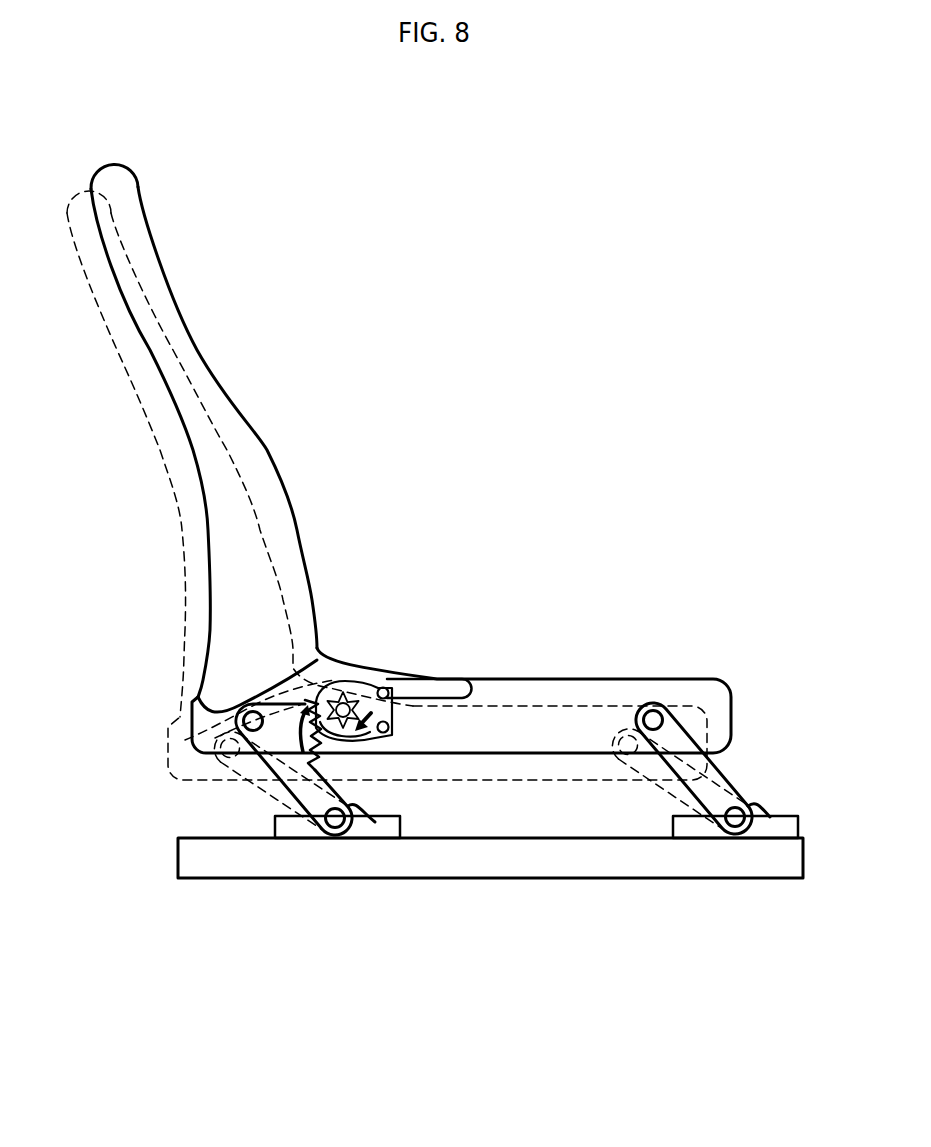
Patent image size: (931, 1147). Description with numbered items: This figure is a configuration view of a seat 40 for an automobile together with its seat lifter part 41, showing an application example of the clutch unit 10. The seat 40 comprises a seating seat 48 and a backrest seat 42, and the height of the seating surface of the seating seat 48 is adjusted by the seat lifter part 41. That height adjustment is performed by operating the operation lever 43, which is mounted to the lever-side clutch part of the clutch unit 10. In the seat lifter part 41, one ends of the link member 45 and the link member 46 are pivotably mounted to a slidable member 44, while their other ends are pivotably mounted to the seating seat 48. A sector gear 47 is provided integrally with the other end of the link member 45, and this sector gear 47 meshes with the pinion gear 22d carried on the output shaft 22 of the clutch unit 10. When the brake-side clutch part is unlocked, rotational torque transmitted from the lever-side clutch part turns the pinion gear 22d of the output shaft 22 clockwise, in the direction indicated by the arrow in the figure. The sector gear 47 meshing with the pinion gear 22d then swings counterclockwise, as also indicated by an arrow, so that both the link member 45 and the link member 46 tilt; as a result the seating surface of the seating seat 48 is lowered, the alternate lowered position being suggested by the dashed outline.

The clutch unit 10 is at (399, 726).
The output shaft 22 is at (345, 688).
The pinion gear 22d is at (366, 712).
The seat 40 is at (344, 390).
The seat lifter part 41 is at (489, 893).
The backrest seat 42 is at (193, 348).
The operation lever 43 is at (448, 688).
The slidable member 44 is at (595, 863).
The link member 45 is at (283, 760).
The link member 46 is at (714, 775).
The sector gear 47 is at (330, 742).
The seating seat 48 is at (598, 678).